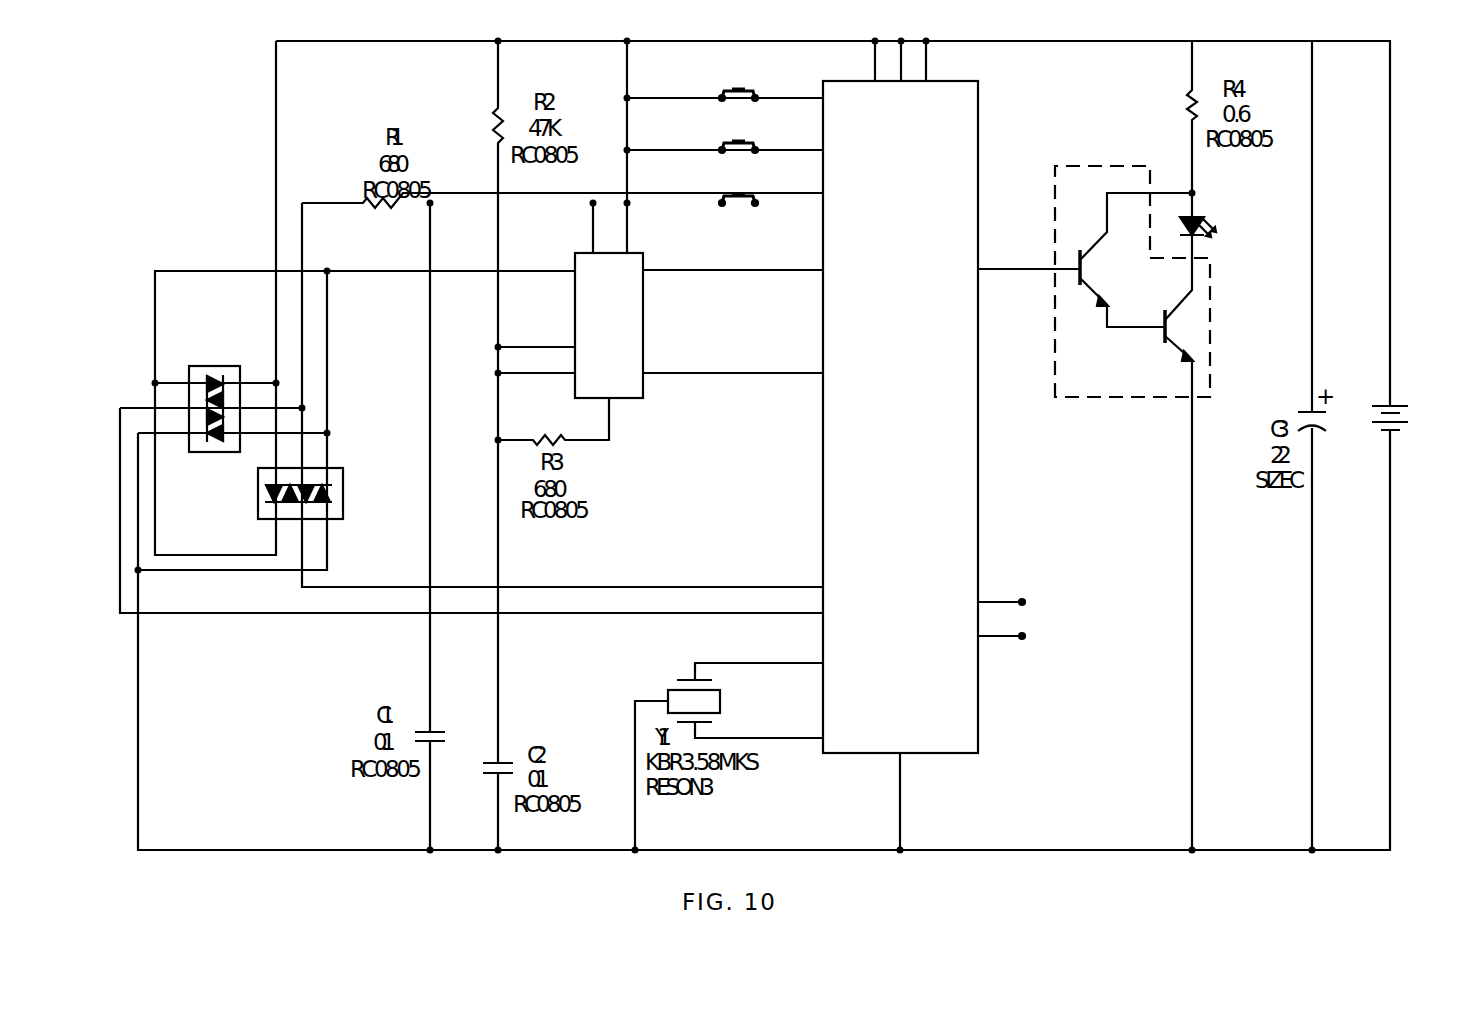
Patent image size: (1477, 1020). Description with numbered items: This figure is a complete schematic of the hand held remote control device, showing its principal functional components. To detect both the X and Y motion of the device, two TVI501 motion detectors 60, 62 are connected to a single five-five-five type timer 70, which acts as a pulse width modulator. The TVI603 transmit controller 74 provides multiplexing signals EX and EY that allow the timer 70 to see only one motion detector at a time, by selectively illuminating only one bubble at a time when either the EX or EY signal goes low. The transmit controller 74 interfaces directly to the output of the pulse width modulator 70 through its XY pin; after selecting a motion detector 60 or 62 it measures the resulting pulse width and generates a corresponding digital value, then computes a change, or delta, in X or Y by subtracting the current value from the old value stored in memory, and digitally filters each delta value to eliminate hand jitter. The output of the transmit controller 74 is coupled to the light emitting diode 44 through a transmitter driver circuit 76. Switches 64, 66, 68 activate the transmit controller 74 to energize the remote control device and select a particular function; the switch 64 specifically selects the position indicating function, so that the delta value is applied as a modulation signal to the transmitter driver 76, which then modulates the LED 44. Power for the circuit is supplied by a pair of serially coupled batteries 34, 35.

The motion detector 60 is at (215, 452).
The motion detector 62 is at (343, 469).
The switch 64 is at (748, 192).
The switch 66 is at (748, 138).
The switch 68 is at (748, 87).
The 555 timer 70 is at (622, 331).
The transmit controller 74 is at (912, 461).
The transmitter driver circuit 76 is at (1108, 395).
The light emitting diode 44 is at (1200, 228).
The battery 34 is at (1406, 387).
The battery 35 is at (1408, 420).